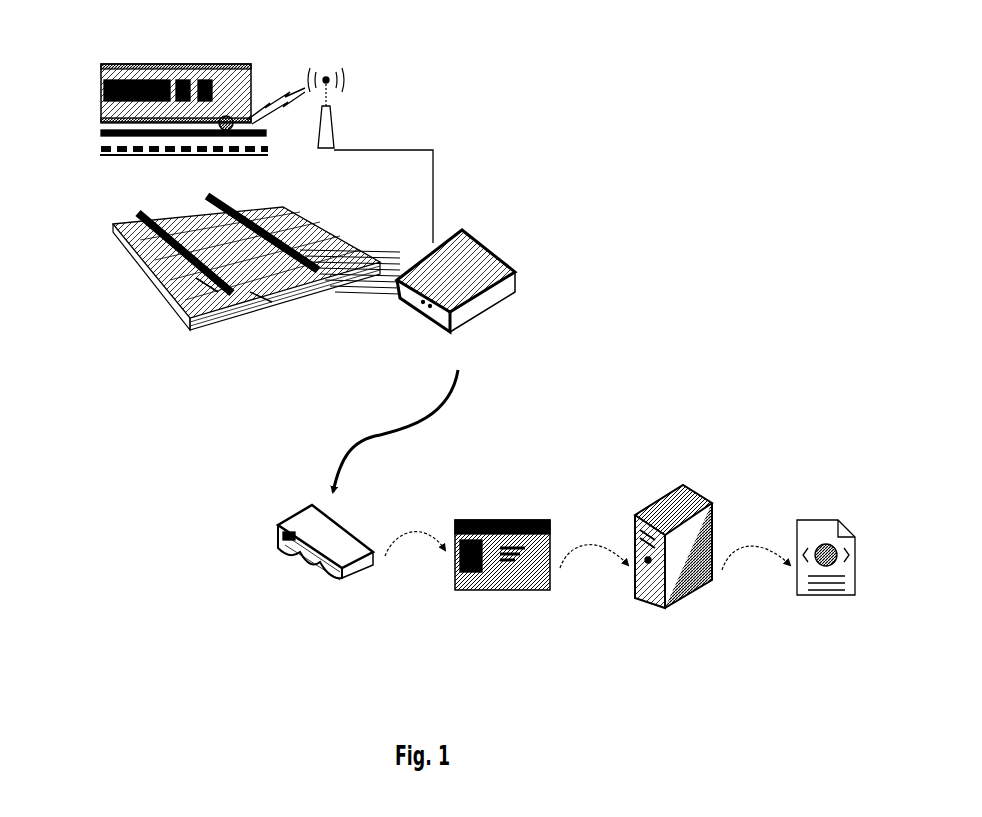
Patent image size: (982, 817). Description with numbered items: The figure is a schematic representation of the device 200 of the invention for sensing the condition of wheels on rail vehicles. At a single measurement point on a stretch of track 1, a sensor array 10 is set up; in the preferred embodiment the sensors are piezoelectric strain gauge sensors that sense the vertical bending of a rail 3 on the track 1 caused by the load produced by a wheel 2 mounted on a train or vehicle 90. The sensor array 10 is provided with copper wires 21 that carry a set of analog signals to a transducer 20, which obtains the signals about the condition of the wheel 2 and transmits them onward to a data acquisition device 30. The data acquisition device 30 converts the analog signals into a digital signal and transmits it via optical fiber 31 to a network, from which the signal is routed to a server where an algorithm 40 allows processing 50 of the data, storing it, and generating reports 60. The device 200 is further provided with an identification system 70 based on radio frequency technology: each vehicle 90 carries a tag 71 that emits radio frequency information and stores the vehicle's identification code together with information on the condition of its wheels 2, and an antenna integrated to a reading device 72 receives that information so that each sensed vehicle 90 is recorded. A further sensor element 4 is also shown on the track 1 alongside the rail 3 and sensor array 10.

The device 200 is at (565, 118).
The vehicle 90 is at (135, 60).
The wheel 2 is at (140, 143).
The tag 71 is at (226, 120).
The identification system 70 is at (285, 78).
The reading device 72 is at (335, 138).
The track 1 is at (178, 205).
The sensor array 10 is at (148, 240).
The rail 3 is at (210, 288).
The sensor 4 is at (262, 302).
The copper wires 21 is at (335, 313).
The transducer 20 is at (452, 282).
The data acquisition device 30 is at (302, 578).
The optical fiber 31 is at (420, 540).
The algorithm 40 is at (506, 568).
The processing 50 is at (650, 572).
The reports 60 is at (827, 568).